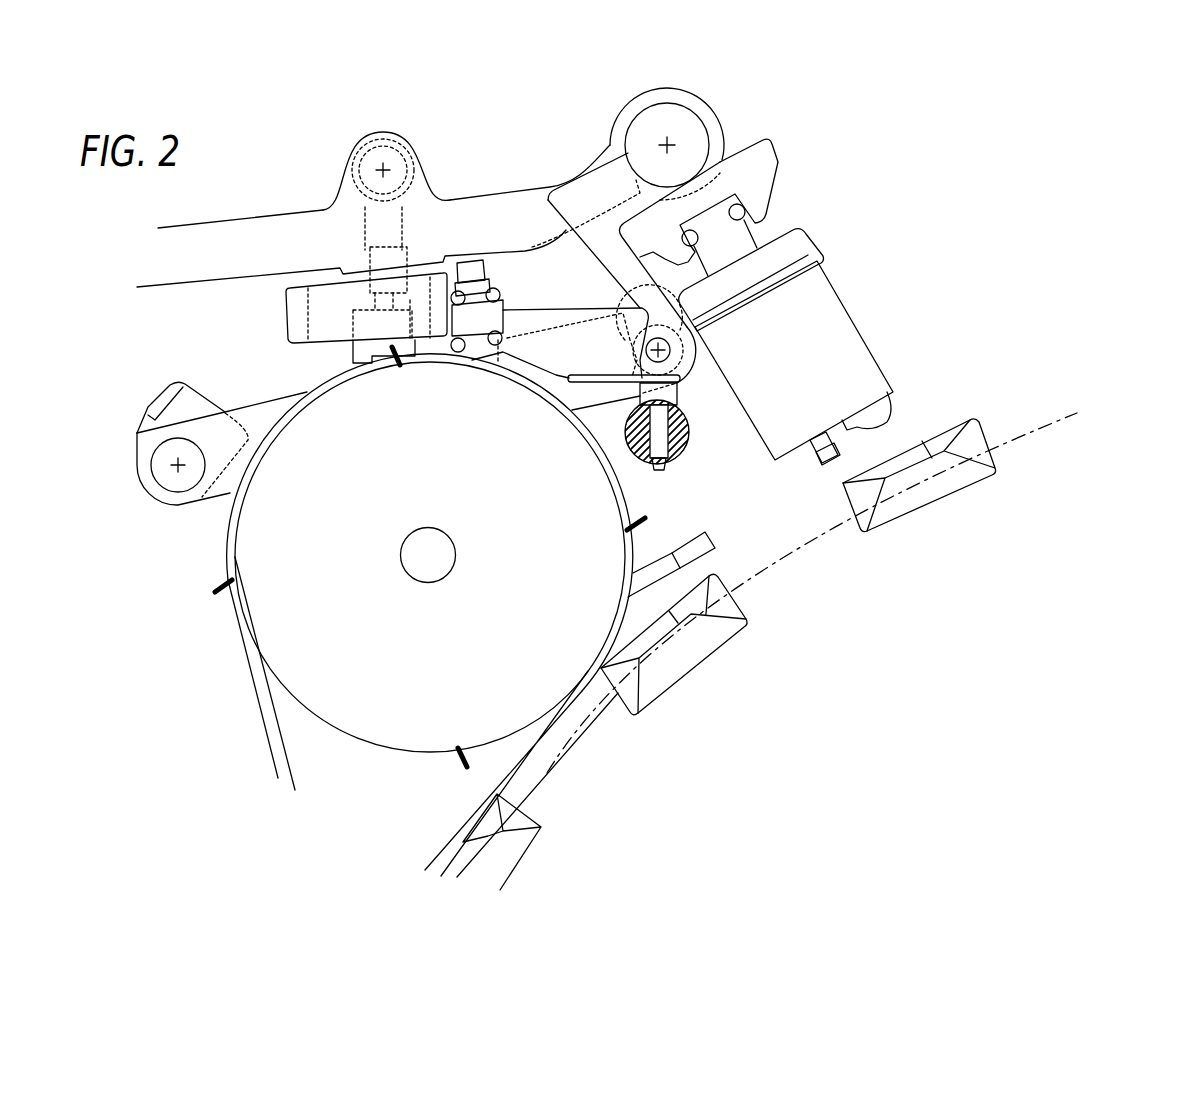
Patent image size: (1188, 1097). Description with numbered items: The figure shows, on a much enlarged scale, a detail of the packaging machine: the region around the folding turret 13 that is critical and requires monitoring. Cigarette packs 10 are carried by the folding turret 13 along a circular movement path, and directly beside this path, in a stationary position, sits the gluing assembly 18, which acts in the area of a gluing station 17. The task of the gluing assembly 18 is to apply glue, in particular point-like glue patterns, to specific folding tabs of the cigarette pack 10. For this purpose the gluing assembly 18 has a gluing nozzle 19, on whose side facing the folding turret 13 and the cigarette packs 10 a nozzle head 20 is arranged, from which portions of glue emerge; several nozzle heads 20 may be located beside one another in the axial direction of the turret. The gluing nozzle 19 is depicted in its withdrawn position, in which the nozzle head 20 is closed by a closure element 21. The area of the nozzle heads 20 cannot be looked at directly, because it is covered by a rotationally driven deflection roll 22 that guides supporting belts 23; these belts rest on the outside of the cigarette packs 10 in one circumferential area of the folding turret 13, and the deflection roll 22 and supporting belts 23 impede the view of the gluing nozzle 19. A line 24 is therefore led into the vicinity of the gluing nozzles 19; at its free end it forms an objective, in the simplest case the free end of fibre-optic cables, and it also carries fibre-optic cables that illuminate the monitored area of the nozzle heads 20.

The cigarette pack 10 is at (1003, 402).
The folding turret 13 is at (1083, 403).
The gluing station 17 is at (860, 157).
The gluing assembly 18 is at (842, 205).
The gluing nozzle 19 is at (855, 318).
The nozzle head 20 is at (822, 447).
The closure element 21 is at (883, 444).
The deflection roll 22 is at (395, 717).
The supporting belts 23 is at (527, 747).
The line 24 is at (645, 572).